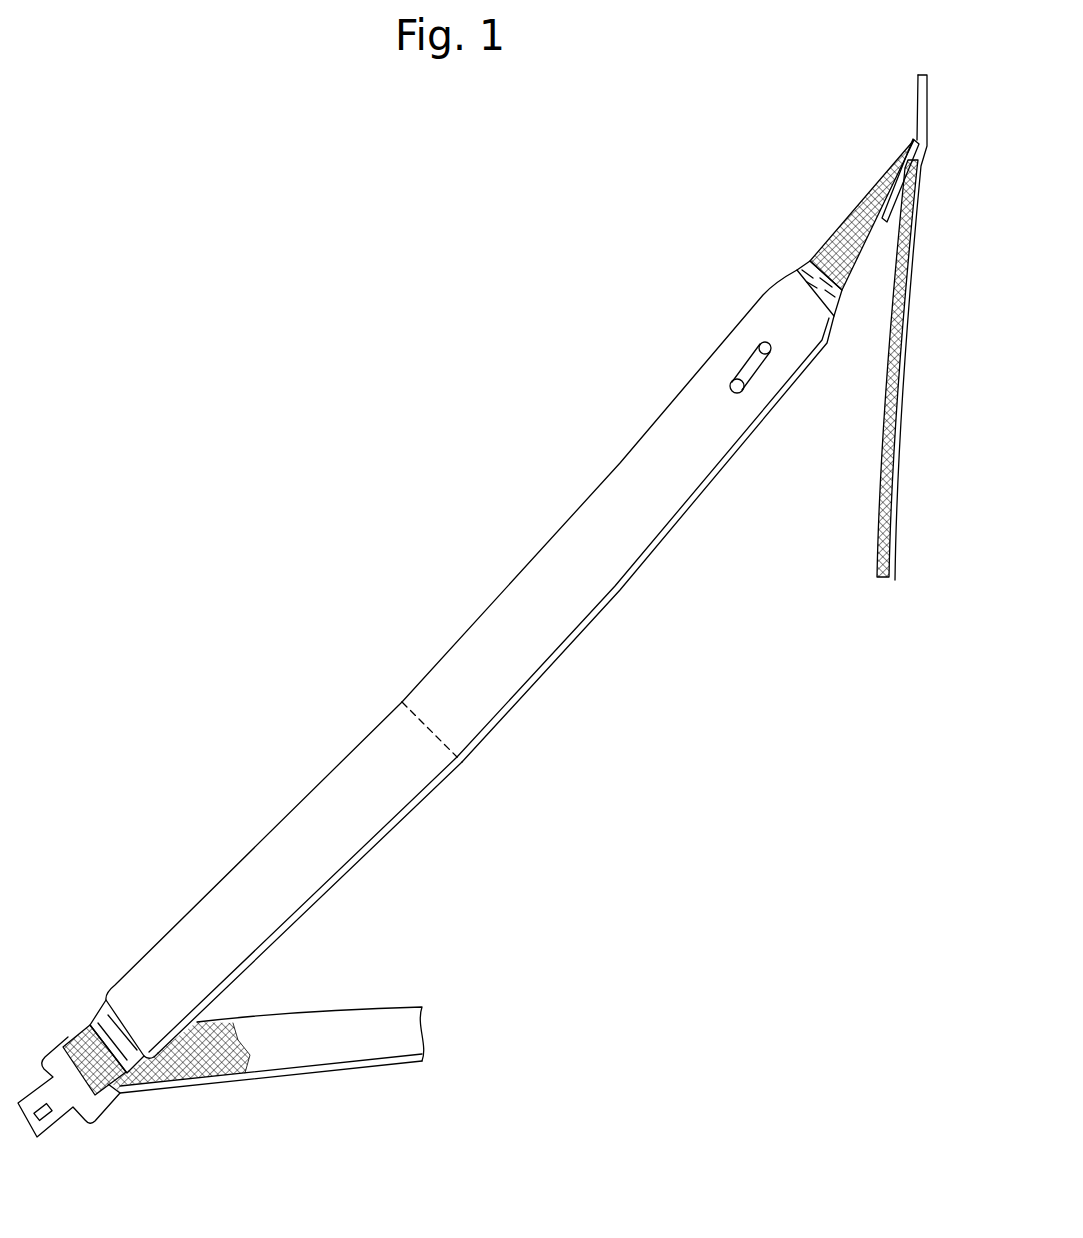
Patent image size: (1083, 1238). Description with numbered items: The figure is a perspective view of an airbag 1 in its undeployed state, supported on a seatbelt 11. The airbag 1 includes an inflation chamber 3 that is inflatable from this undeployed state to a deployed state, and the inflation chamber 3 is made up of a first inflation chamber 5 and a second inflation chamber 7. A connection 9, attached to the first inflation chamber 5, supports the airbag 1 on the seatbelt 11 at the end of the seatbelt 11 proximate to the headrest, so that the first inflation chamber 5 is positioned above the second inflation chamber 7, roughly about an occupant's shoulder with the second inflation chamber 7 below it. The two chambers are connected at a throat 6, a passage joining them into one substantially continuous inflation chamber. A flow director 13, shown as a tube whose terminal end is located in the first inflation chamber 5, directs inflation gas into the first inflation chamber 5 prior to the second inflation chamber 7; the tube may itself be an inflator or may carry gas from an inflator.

The airbag 1 is at (470, 418).
The inflation chamber 3 is at (437, 641).
The first inflation chamber 5 is at (588, 577).
The throat 6 is at (447, 740).
The second inflation chamber 7 is at (310, 838).
The connection 9 is at (808, 263).
The seatbelt 11 is at (855, 224).
The flow director 13 is at (745, 360).